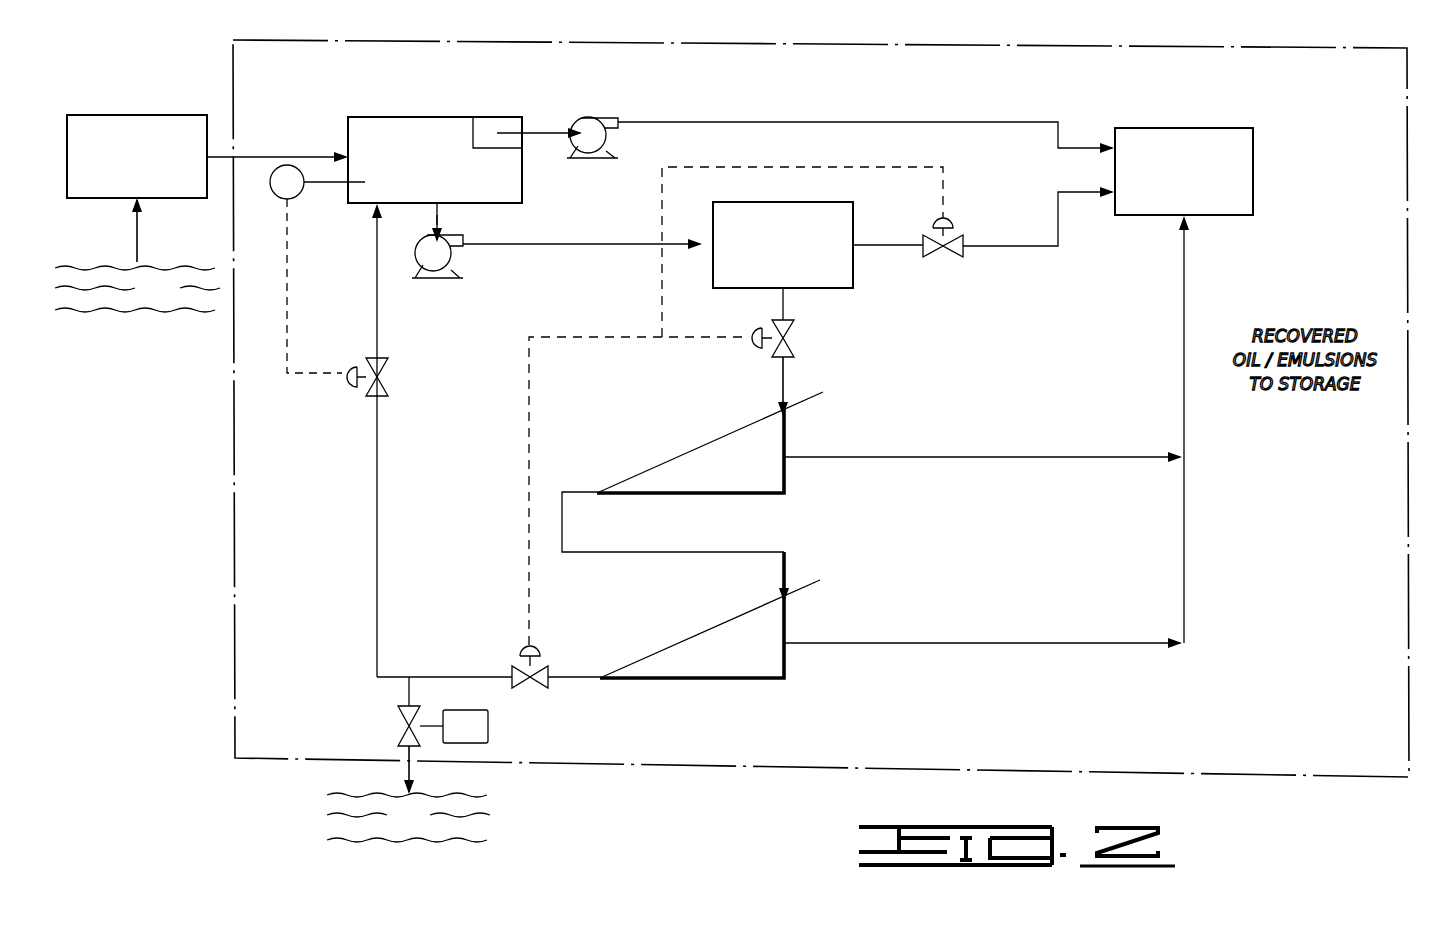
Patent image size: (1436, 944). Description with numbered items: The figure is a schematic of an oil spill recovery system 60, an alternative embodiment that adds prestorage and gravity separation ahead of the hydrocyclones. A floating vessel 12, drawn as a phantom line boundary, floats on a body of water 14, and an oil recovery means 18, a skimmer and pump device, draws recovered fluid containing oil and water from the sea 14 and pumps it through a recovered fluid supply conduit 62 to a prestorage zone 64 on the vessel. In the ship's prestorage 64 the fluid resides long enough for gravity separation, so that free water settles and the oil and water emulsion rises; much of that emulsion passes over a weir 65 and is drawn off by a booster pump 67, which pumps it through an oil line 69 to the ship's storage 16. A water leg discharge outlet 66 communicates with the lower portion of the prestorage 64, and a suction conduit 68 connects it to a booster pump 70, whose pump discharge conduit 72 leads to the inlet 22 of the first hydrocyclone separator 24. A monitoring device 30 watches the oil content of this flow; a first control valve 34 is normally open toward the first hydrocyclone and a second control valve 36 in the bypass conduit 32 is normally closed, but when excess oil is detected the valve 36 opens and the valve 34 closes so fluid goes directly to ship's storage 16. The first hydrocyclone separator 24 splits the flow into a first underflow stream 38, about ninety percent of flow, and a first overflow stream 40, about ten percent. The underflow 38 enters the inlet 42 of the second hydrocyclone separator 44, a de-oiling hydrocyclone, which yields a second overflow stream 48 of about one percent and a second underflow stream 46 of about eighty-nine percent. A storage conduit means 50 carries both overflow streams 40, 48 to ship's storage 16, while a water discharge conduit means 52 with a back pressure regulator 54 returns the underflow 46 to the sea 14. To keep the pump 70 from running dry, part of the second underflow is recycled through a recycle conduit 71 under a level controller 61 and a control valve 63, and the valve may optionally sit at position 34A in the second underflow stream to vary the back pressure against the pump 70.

The floating vessel 12 is at (895, 36).
The body of water 14 is at (148, 302).
The ship's storage 16 is at (1200, 128).
The oil recovery means 18 is at (110, 112).
The inlet 22 is at (786, 416).
The first hydrocyclone separator 24 is at (727, 445).
The monitoring device 30 is at (795, 261).
The bypass conduit 32 is at (1030, 252).
The first control valve 34 is at (796, 335).
The alternative valve position 34A is at (552, 670).
The second control valve 36 is at (943, 260).
The first underflow stream 38 is at (577, 490).
The first overflow stream 40 is at (924, 458).
The inlet 42 is at (786, 600).
The second hydrocyclone separator 44 is at (722, 635).
The second underflow stream 46 is at (582, 684).
The second overflow stream 48 is at (924, 645).
The storage conduit means 50 is at (1190, 292).
The water discharge conduit means 52 is at (405, 684).
The back pressure regulator 54 is at (398, 712).
The oil spill recovery system 60 is at (200, 668).
The level controller 61 is at (290, 200).
The recovered fluid supply conduit 62 is at (218, 150).
The control valve 63 is at (390, 372).
The prestorage zone 64 is at (525, 190).
The weir 65 is at (478, 128).
The water leg discharge outlet 66 is at (445, 207).
The suction conduit 68 is at (434, 214).
The booster pump 67 is at (576, 108).
The oil line 69 is at (866, 114).
The booster pump 70 is at (450, 258).
The recycle conduit 71 is at (380, 332).
The pump discharge conduit 72 is at (672, 243).